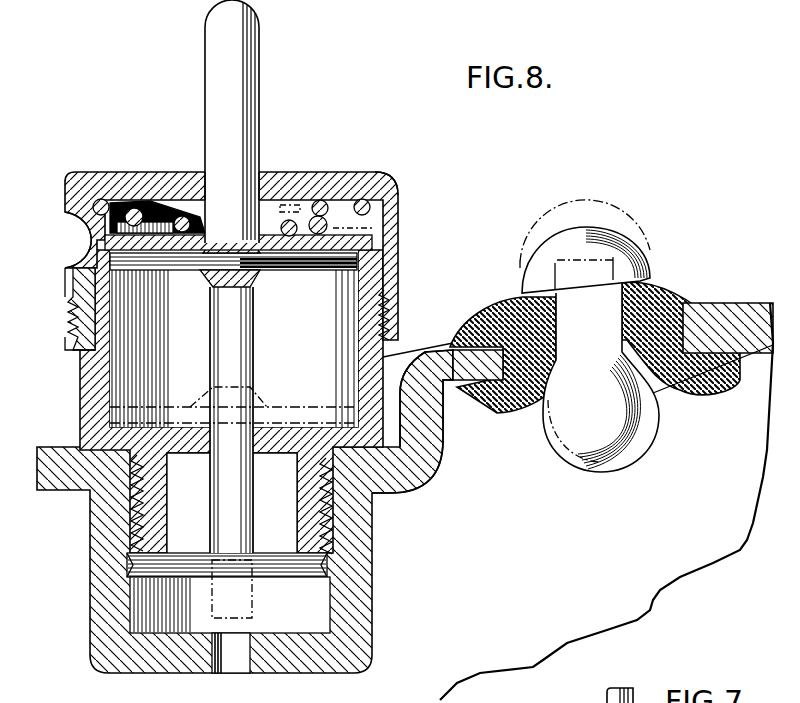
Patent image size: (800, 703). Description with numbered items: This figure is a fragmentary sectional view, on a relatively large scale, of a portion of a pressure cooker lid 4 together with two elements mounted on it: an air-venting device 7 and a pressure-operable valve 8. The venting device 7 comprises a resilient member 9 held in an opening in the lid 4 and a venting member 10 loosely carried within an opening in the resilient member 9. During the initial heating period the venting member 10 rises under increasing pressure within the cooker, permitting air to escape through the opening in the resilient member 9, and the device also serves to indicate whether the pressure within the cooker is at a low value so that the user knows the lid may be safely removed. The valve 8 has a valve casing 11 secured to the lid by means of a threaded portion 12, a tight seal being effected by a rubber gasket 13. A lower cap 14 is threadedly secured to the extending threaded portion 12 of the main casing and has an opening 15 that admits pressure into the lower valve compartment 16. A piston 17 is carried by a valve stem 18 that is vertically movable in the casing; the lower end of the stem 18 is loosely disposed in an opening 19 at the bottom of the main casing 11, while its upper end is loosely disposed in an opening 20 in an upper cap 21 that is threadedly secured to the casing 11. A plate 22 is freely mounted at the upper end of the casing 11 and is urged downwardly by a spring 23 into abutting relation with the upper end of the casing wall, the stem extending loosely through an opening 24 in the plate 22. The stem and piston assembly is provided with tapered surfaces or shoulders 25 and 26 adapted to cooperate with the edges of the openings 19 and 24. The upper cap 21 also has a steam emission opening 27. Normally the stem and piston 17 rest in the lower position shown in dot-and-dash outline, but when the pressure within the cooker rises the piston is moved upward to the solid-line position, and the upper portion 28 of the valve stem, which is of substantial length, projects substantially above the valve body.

The lid 4 is at (743, 313).
The air-venting device 7 is at (667, 282).
The pressure-operable valve 8 is at (400, 250).
The resilient member 9 is at (497, 413).
The venting member 10 is at (622, 205).
The valve casing 11 is at (92, 388).
The threaded portion 12 is at (318, 543).
The rubber gasket 13 is at (390, 490).
The lower cap 14 is at (373, 618).
The opening 15 is at (232, 663).
The lower valve compartment 16 is at (297, 620).
The piston 17 is at (304, 270).
The valve stem 18 is at (255, 345).
The opening 19 is at (252, 460).
The opening 20 is at (263, 172).
The upper cap 21 is at (380, 170).
The plate 22 is at (358, 242).
The spring 23 is at (368, 205).
The opening 24 is at (262, 232).
The tapered surface 25 is at (215, 272).
The tapered surface 26 is at (223, 250).
The steam emission opening 27 is at (78, 238).
The upper portion of valve stem 28 is at (261, 48).